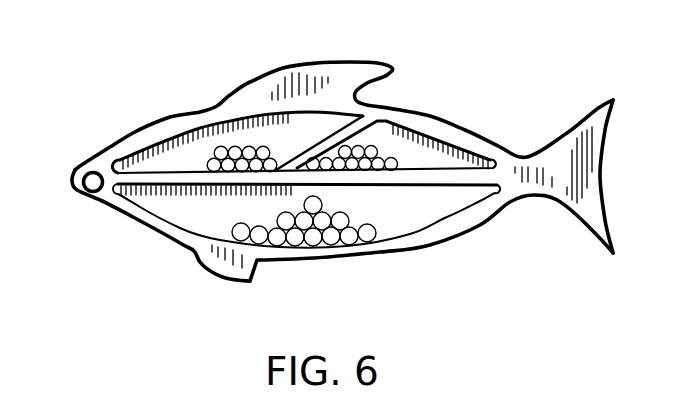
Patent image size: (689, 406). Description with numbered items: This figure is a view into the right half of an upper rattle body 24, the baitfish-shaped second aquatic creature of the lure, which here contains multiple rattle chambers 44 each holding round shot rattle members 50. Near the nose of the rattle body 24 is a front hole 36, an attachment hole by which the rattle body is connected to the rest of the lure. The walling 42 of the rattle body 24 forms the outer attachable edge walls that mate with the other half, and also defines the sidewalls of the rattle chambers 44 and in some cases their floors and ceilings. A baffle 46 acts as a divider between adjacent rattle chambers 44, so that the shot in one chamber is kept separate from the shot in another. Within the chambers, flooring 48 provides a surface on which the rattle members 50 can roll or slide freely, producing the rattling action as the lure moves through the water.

The upper rattle body 24 is at (468, 228).
The front hole 36 is at (96, 181).
The walling 42 is at (128, 213).
The rattle chamber 44 is at (190, 203).
The baffle 46 is at (369, 116).
The flooring 48 is at (310, 150).
The rattle member 50 is at (367, 163).